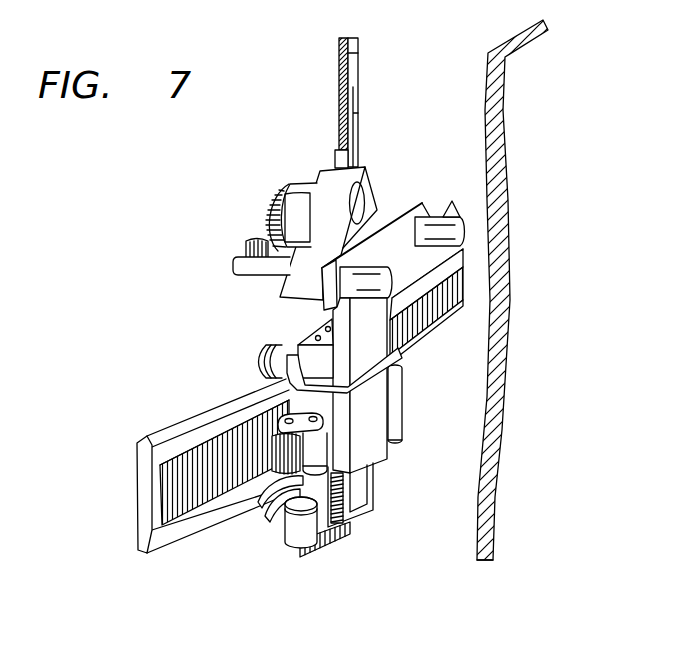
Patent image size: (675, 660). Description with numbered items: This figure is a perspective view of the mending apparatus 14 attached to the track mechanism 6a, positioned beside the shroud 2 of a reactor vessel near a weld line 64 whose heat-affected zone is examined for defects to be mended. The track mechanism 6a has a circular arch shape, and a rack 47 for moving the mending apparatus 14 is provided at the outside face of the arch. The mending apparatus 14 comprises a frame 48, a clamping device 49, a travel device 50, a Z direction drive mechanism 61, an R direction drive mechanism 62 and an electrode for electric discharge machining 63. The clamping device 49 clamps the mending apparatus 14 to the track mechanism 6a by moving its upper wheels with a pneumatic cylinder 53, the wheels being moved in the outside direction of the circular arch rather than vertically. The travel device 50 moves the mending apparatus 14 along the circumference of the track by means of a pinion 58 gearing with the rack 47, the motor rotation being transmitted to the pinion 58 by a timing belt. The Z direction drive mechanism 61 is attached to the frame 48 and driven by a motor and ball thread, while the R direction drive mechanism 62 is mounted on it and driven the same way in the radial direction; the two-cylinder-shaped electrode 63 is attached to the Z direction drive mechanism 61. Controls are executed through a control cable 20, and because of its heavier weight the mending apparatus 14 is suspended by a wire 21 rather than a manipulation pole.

The shroud 2 is at (560, 523).
The track mechanism 6a is at (136, 507).
The mending apparatus 14 is at (369, 535).
The control cable 20 is at (338, 55).
The wire 21 is at (358, 43).
The rack 47 is at (170, 487).
The frame 48 is at (300, 340).
The clamping device 49 is at (278, 380).
The travel device 50 is at (318, 448).
The pneumatic cylinder 53 is at (400, 434).
The pinion 58 is at (262, 503).
The Z direction drive mechanism 61 is at (302, 565).
The R direction drive mechanism 62 is at (283, 178).
The electrode for electric discharge machining 63 is at (438, 213).
The weld line 64 is at (505, 418).